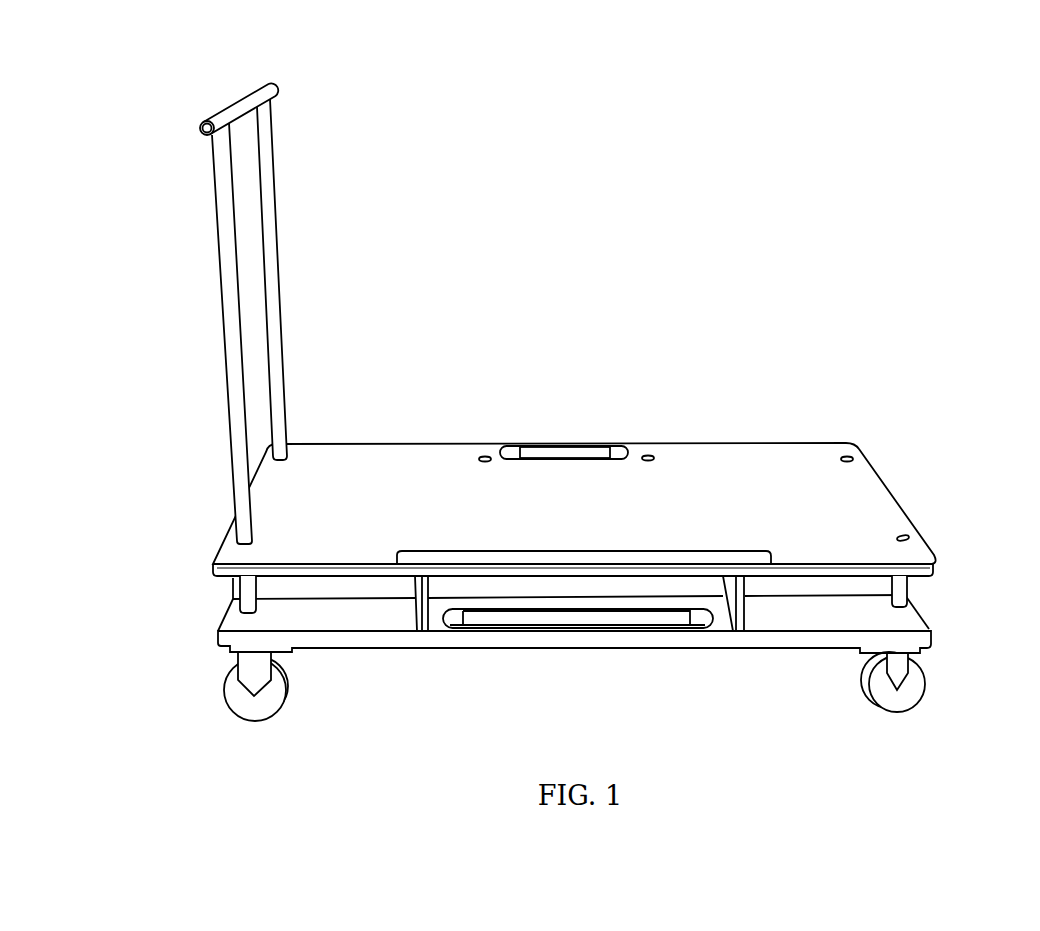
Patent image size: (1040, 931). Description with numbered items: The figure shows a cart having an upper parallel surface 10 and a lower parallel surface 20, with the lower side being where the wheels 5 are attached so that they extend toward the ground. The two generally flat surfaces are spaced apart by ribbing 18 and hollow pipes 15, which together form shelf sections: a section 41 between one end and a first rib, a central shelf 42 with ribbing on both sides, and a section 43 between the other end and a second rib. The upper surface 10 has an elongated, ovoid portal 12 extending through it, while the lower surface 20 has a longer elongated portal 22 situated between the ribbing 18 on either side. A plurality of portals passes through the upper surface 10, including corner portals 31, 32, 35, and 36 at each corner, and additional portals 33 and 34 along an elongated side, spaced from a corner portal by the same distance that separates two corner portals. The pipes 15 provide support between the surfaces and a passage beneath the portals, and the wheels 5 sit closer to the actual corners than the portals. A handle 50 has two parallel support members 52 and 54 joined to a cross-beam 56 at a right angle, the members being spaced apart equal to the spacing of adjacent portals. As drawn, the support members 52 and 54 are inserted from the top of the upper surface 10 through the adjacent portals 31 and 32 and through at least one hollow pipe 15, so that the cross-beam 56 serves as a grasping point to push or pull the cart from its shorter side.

The wheels 5 is at (280, 703).
The upper parallel surface 10 is at (718, 470).
The elongated portal 12 is at (564, 450).
The pipes 15 is at (245, 597).
The ribbing 18 is at (412, 615).
The lower parallel surface 20 is at (224, 648).
The elongated portal 22 is at (512, 625).
The corner portal 31 is at (237, 543).
The corner portal 32 is at (273, 458).
The elongated side portal 33 is at (483, 455).
The elongated side portal 34 is at (652, 456).
The corner portal 35 is at (851, 456).
The corner portal 36 is at (908, 538).
The shelf section 41 is at (343, 588).
The central shelf 42 is at (596, 585).
The shelf section 43 is at (812, 590).
The handle 50 is at (250, 301).
The support member 52 is at (226, 230).
The support member 54 is at (275, 313).
The cross-beam 56 is at (235, 110).